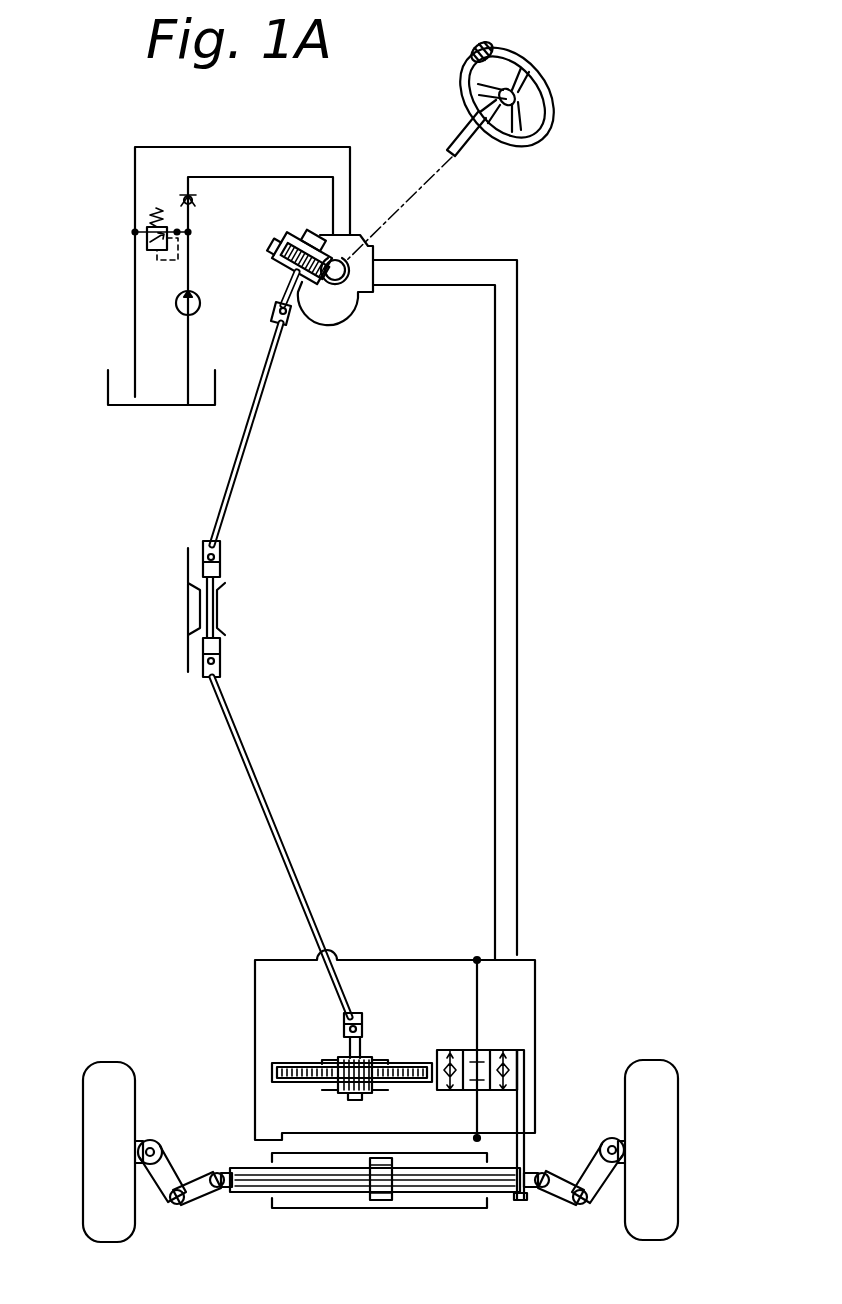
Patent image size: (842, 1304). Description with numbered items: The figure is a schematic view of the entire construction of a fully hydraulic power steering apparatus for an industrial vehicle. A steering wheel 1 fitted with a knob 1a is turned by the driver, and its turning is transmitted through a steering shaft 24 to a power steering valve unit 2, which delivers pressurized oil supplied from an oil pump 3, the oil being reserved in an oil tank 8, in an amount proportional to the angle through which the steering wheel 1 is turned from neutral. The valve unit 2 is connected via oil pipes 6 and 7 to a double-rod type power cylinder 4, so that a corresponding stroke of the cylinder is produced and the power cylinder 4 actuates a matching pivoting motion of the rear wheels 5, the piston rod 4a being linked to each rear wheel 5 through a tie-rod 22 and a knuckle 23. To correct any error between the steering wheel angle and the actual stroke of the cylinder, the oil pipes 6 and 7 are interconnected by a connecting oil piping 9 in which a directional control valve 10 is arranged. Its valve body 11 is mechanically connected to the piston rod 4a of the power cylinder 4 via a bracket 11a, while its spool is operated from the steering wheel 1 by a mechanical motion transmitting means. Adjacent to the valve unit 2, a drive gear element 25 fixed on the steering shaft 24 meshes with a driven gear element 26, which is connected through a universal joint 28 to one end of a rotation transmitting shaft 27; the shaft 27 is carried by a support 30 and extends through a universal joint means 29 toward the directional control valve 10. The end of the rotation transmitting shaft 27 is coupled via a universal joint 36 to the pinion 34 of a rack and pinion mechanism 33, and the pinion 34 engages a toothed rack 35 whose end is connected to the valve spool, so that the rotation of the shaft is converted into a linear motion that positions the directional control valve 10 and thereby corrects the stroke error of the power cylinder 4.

The steering wheel 1 is at (553, 118).
The knob 1a is at (492, 45).
The power steering valve unit 2 is at (365, 305).
The oil pump 3 is at (202, 306).
The power cylinder 4 is at (315, 1208).
The piston rod 4a is at (437, 1193).
The rear wheels 5 is at (83, 1128).
The oil pipe 6 is at (493, 683).
The oil pipe 7 is at (519, 680).
The oil tank 8 is at (138, 407).
The connecting oil piping 9 is at (482, 1003).
The directional control valve 10 is at (459, 1039).
The valve body 11 is at (500, 1050).
The bracket 11a is at (524, 1097).
The tie-rod 22 is at (197, 1200).
The knuckle 23 is at (170, 1168).
The steering shaft 24 is at (468, 140).
The drive gear element 25 is at (334, 285).
The driven gear element 26 is at (280, 242).
The rotation transmitting shaft 27 is at (242, 480).
The universal joint 28 is at (276, 306).
The universal joint means 29 is at (220, 558).
The support 30 is at (190, 610).
The rack and pinion mechanism 33 is at (307, 1048).
The pinion 34 is at (340, 1086).
The toothed rack 35 is at (403, 1078).
The universal joint 36 is at (362, 1023).